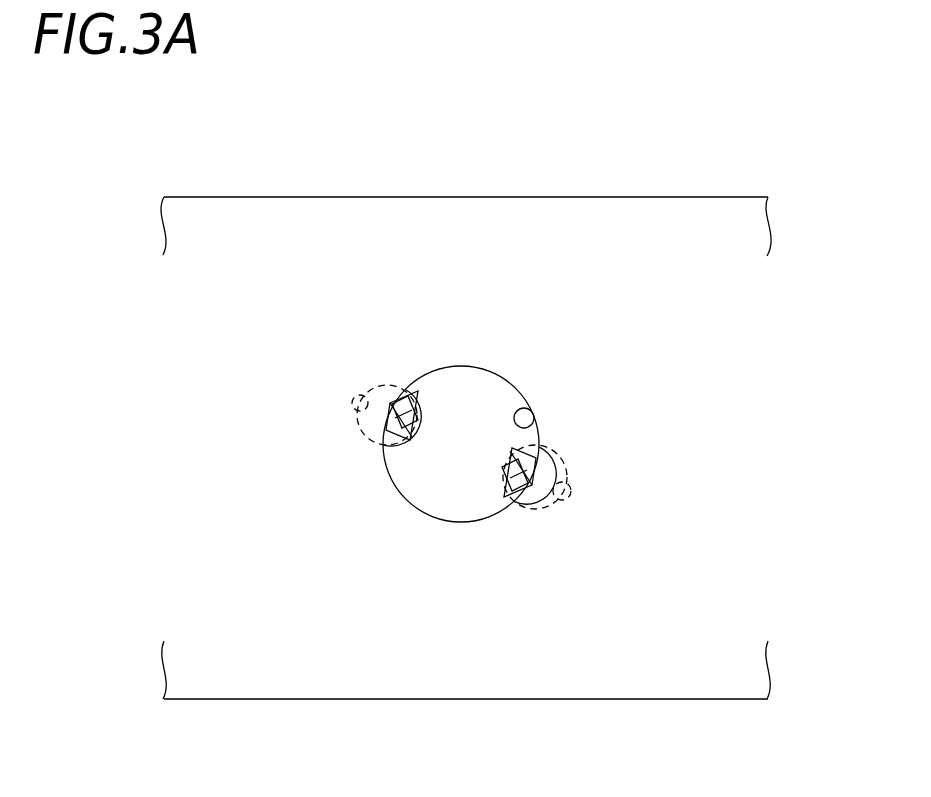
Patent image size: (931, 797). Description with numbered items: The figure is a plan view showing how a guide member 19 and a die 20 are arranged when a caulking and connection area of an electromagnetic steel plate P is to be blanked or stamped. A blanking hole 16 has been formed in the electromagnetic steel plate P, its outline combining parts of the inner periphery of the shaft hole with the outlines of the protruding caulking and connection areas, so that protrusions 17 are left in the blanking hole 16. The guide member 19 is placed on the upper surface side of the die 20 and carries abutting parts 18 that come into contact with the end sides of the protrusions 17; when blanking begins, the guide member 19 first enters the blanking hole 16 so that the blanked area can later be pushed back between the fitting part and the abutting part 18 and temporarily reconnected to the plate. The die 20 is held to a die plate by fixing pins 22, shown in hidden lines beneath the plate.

The electromagnetic steel plate P is at (211, 197).
The blanking hole 16 is at (526, 410).
The protrusion 17 is at (397, 432).
The abutting part 18 is at (392, 402).
The guide member 19 is at (412, 436).
The die 20 is at (360, 430).
The fixing pin 22 is at (352, 400).